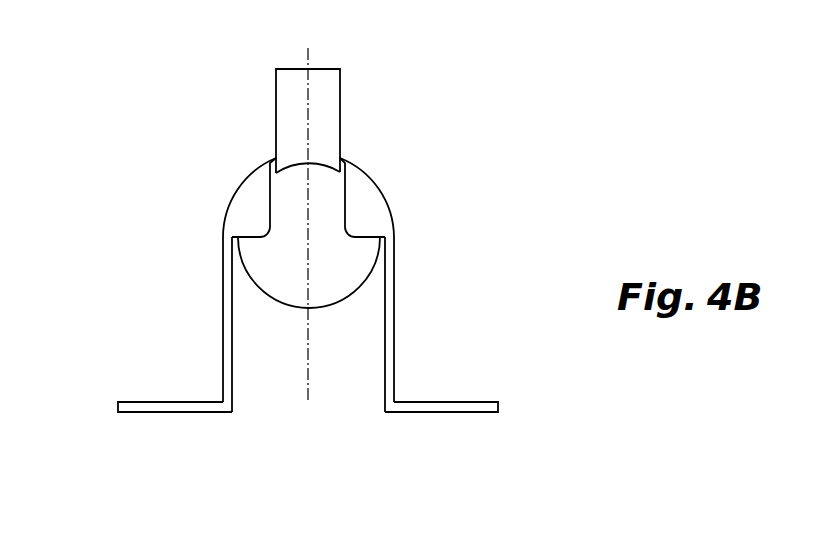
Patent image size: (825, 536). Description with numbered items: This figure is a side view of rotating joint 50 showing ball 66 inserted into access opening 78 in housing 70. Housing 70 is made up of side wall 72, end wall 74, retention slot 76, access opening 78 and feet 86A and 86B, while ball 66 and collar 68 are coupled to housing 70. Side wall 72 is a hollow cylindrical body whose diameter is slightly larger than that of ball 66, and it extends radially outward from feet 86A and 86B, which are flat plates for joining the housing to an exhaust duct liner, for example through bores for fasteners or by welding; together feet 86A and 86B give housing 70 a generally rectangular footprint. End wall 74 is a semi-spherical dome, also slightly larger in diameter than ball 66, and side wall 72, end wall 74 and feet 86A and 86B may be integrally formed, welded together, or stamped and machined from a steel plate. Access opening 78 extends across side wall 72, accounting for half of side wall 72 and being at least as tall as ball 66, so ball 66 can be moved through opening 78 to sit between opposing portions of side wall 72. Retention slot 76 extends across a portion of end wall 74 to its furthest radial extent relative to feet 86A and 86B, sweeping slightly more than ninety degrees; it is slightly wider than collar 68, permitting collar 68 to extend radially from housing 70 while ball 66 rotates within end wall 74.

The rotating joint 50 is at (438, 138).
The ball 66 is at (287, 286).
The collar 68 is at (332, 117).
The housing 70 is at (190, 228).
The side wall 72 is at (394, 317).
The end wall 74 is at (377, 216).
The retention slot 76 is at (345, 203).
The access opening 78 is at (383, 362).
The foot 86A is at (450, 402).
The foot 86B is at (155, 402).